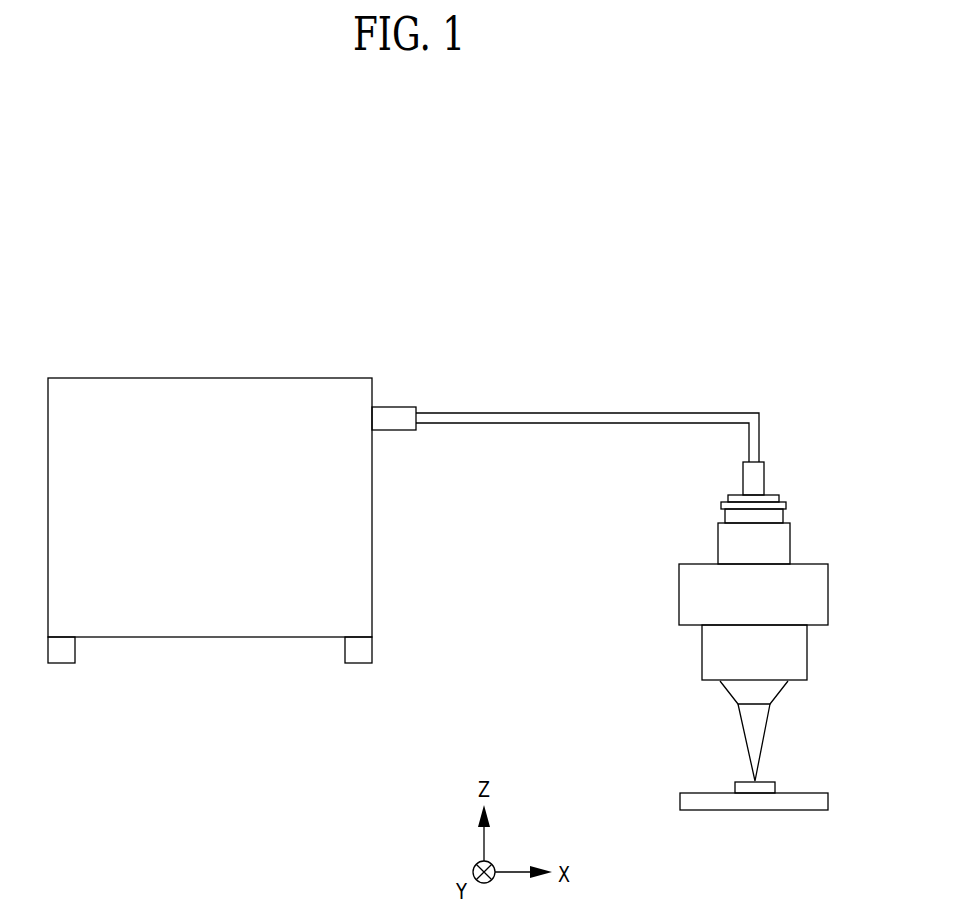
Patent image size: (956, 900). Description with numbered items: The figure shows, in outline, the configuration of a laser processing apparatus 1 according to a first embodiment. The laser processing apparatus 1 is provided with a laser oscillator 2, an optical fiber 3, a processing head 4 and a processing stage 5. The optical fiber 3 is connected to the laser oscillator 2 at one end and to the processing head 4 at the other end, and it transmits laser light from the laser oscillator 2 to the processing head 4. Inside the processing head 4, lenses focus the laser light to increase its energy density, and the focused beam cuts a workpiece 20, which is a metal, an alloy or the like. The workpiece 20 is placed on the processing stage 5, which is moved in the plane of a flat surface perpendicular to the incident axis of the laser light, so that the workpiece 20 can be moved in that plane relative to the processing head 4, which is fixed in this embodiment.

The laser processing apparatus 1 is at (447, 260).
The laser oscillator 2 is at (207, 378).
The optical fiber 3 is at (576, 413).
The processing head 4 is at (679, 592).
The workpiece 20 is at (735, 784).
The processing stage 5 is at (680, 800).